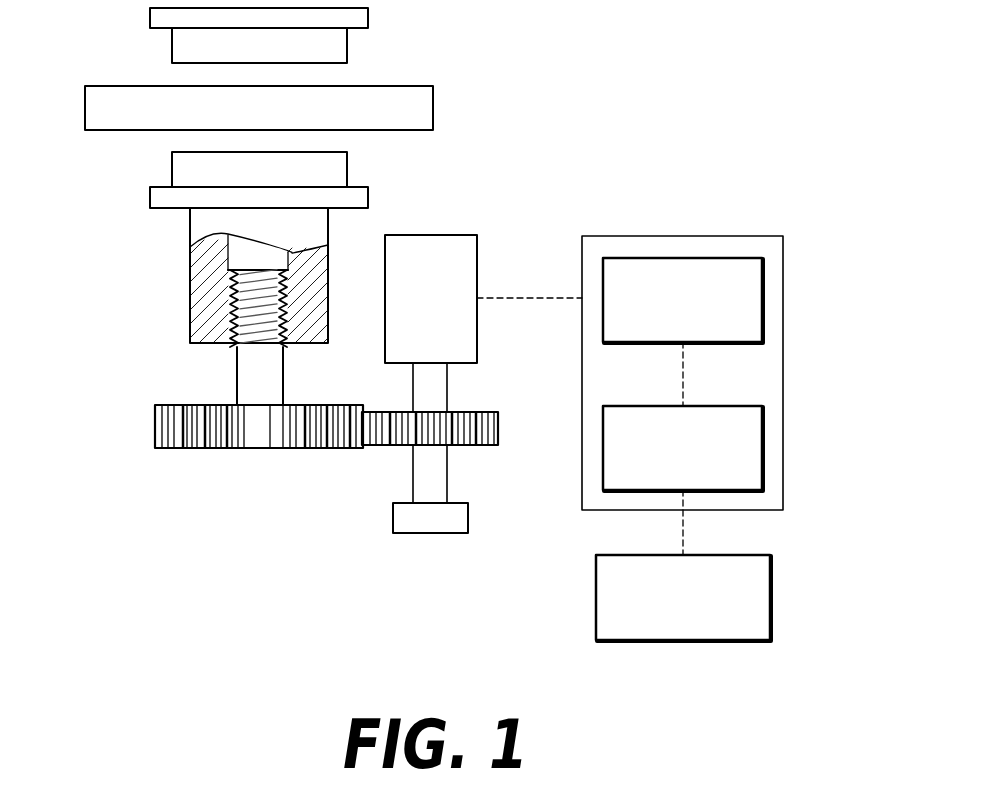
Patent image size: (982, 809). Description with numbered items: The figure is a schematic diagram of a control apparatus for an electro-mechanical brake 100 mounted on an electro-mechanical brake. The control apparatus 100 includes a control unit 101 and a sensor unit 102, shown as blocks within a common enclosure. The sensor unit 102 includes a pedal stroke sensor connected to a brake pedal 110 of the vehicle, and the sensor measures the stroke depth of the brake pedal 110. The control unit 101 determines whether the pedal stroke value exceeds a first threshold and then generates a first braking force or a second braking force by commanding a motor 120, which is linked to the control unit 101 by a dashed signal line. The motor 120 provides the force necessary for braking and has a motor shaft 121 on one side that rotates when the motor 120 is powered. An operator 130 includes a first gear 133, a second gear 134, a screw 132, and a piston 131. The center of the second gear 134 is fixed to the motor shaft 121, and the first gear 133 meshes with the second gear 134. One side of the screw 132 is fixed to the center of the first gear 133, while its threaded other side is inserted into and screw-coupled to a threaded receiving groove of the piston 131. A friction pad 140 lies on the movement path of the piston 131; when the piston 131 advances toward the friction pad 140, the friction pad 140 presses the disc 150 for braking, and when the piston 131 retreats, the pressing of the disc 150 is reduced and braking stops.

The control apparatus for an electro-mechanical brake 100 is at (658, 236).
The control unit 101 is at (764, 292).
The sensor unit 102 is at (764, 440).
The brake pedal 110 is at (772, 592).
The motor 120 is at (442, 240).
The motor shaft 121 is at (442, 393).
The operator 130 is at (108, 370).
The piston 131 is at (189, 287).
The screw 132 is at (237, 375).
The first gear 133 is at (160, 428).
The second gear 134 is at (383, 445).
The friction pad 140 is at (172, 52).
The disc 150 is at (433, 104).